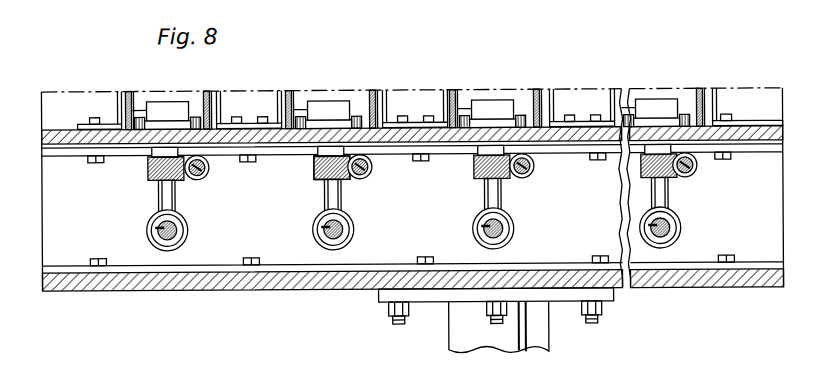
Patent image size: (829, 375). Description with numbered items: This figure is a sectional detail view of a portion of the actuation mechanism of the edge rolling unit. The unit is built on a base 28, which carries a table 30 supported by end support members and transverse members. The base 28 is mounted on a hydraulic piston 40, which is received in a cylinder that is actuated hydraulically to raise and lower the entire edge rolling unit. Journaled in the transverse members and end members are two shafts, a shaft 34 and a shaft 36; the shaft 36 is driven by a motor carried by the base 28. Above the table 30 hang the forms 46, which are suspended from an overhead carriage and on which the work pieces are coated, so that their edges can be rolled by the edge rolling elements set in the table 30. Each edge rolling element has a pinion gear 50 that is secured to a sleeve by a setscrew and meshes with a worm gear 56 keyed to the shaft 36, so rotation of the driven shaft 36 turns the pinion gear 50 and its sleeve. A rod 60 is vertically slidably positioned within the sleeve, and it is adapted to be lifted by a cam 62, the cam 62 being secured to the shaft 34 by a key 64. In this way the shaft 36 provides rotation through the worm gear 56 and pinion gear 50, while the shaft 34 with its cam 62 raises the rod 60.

The base 28 is at (312, 290).
The table 30 is at (297, 146).
The shaft 34 is at (341, 231).
The shaft 36 is at (198, 179).
The hydraulic piston 40 is at (541, 349).
The form 46 is at (328, 99).
The pinion gear 50 is at (312, 178).
The worm gear 56 is at (349, 180).
The rod 60 is at (336, 196).
The cam 62 is at (318, 237).
The key 64 is at (324, 227).